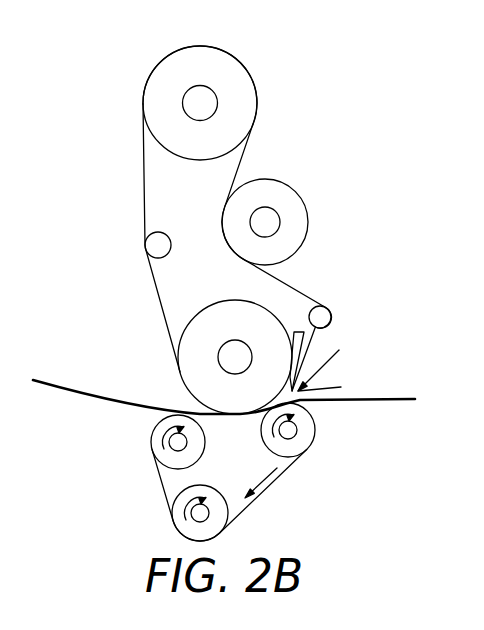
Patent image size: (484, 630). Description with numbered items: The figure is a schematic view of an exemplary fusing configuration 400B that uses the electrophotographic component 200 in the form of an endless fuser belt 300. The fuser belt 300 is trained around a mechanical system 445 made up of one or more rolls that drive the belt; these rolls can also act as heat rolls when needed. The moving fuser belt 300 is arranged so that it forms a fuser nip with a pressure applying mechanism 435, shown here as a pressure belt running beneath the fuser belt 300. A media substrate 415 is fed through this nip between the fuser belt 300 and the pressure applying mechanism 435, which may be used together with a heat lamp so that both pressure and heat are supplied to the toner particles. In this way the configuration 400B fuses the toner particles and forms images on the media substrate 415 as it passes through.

The fusing configuration 400B is at (315, 57).
The mechanical system 445 is at (268, 138).
The fuser belt 300 is at (143, 165).
The electrophotographic component 200 is at (163, 315).
The media substrate 415 is at (183, 401).
The pressure applying mechanism 435 is at (142, 435).